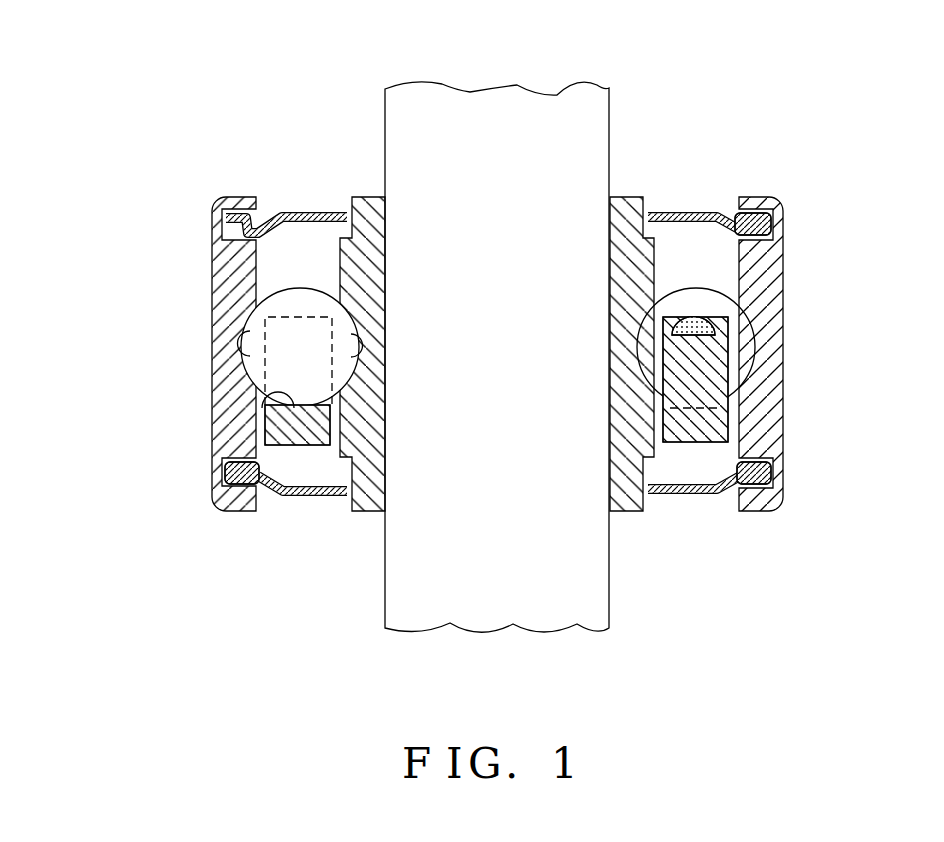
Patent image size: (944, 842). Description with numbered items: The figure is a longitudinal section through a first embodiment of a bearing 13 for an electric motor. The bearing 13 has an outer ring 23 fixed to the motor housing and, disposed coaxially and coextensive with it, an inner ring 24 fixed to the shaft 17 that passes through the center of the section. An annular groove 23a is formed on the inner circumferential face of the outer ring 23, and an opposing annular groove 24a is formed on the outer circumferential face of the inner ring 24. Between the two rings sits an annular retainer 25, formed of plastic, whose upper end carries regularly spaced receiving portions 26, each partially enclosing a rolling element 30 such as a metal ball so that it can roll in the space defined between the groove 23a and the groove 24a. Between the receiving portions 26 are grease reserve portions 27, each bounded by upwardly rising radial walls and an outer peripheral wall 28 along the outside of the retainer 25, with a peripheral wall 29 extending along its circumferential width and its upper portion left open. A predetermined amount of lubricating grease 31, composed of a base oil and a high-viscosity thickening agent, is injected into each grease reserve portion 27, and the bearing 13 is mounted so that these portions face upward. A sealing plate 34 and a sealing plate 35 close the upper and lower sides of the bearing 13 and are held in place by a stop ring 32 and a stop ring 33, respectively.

The bearing 13 is at (205, 195).
The shaft 17 is at (598, 110).
The outer ring 23 is at (213, 258).
The annular groove 23a is at (236, 345).
The inner ring 24 is at (386, 230).
The annular groove 24a is at (384, 358).
The annular retainer 25 is at (262, 409).
The receiving portion 26 is at (266, 390).
The grease reserve portion 27 is at (688, 310).
The outer peripheral wall 28 is at (768, 280).
The peripheral wall 29 is at (720, 323).
The rolling element 30 is at (247, 320).
The lubricating grease 31 is at (718, 325).
The stop ring 32 is at (248, 212).
The stop ring 33 is at (250, 486).
The sealing plate 34 is at (318, 213).
The sealing plate 35 is at (317, 497).